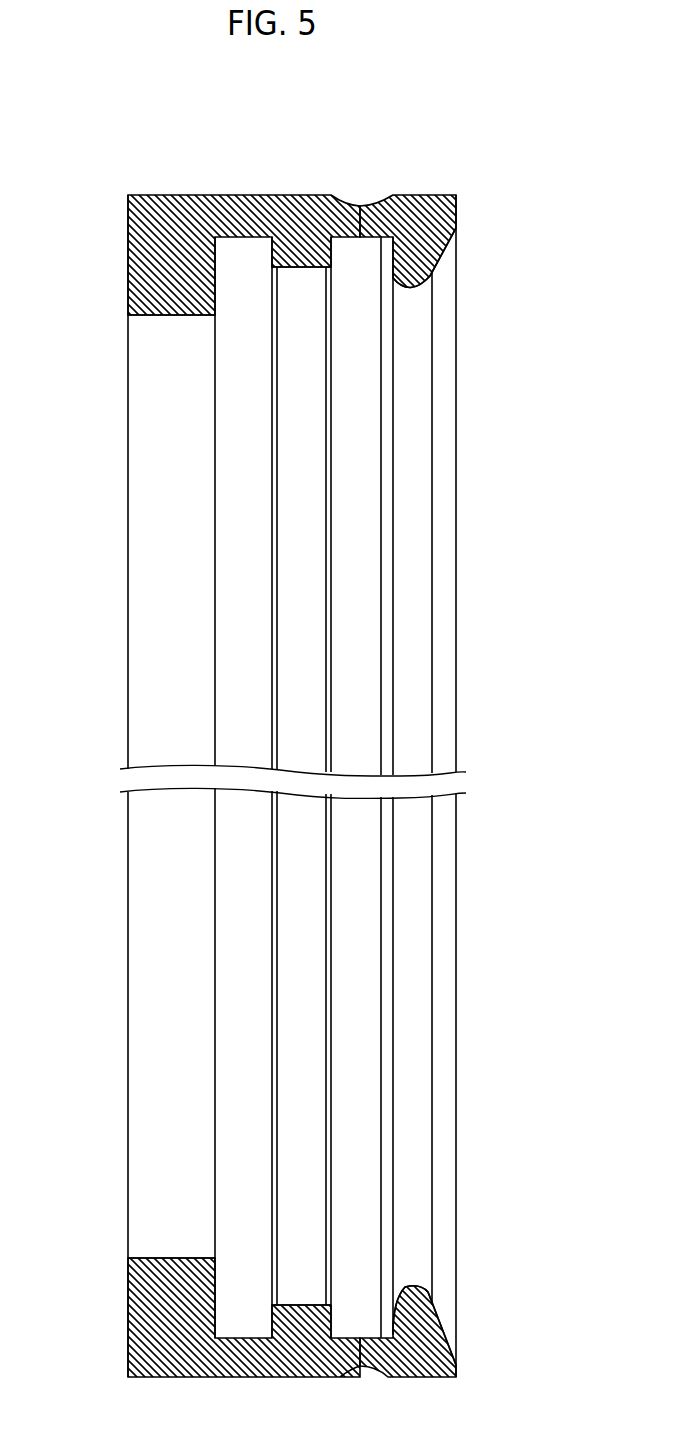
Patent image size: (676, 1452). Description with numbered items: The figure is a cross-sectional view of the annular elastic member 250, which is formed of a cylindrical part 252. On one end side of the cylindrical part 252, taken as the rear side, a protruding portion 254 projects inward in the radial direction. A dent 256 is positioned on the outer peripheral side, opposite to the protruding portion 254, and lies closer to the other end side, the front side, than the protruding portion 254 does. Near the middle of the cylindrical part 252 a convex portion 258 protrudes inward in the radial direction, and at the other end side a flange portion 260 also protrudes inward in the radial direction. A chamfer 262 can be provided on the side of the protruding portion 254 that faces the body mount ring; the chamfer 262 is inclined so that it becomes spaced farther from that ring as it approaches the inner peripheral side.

The elastic member 250 is at (446, 141).
The cylindrical part 252 is at (243, 195).
The protruding portion 254 is at (413, 291).
The dent 256 is at (363, 198).
The convex portion 258 is at (303, 268).
The flange portion 260 is at (172, 316).
The chamfer 262 is at (443, 257).